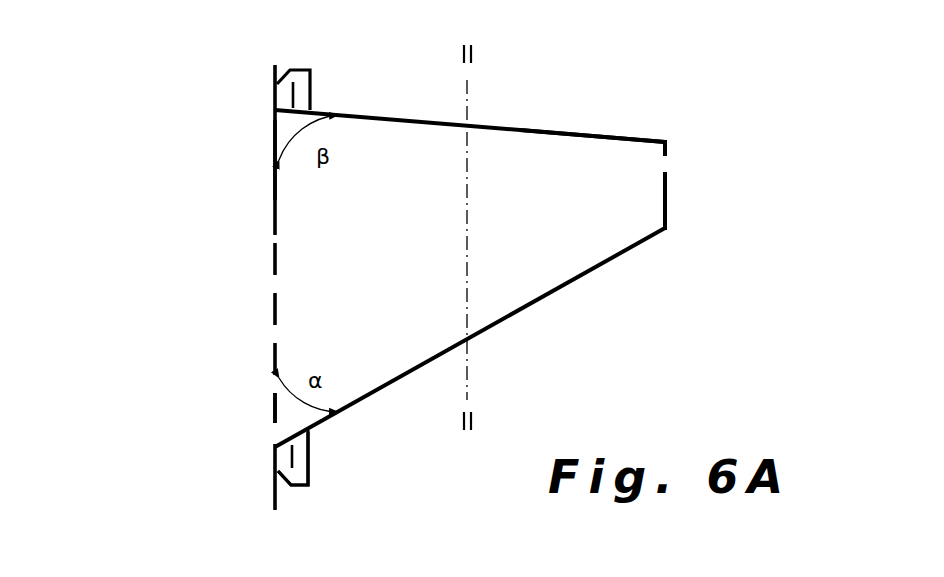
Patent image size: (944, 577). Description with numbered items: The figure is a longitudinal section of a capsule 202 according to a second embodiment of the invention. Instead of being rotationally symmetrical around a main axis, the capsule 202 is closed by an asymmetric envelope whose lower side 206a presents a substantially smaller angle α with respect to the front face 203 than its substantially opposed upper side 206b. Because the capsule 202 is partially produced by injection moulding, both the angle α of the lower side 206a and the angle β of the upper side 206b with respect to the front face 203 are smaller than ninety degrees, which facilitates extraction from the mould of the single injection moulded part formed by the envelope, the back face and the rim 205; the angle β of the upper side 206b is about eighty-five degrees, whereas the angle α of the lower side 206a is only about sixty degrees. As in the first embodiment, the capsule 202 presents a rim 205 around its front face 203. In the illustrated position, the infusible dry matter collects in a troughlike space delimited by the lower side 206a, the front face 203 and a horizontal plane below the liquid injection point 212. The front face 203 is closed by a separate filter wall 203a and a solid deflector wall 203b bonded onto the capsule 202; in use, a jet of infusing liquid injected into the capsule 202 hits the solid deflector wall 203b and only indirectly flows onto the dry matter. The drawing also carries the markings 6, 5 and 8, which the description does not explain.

The front face 203 is at (183, 228).
The filter wall 203a is at (273, 423).
The solid deflector wall 203b is at (274, 180).
The lower side 206a is at (356, 411).
The upper side 206b is at (370, 115).
The capsule 202 is at (606, 137).
The liquid injection point 212 is at (663, 166).
The end wall 8 is at (667, 207).
The rim 205 is at (297, 490).
The view direction 6 is at (573, 112).
The flow direction 5 is at (760, 193).